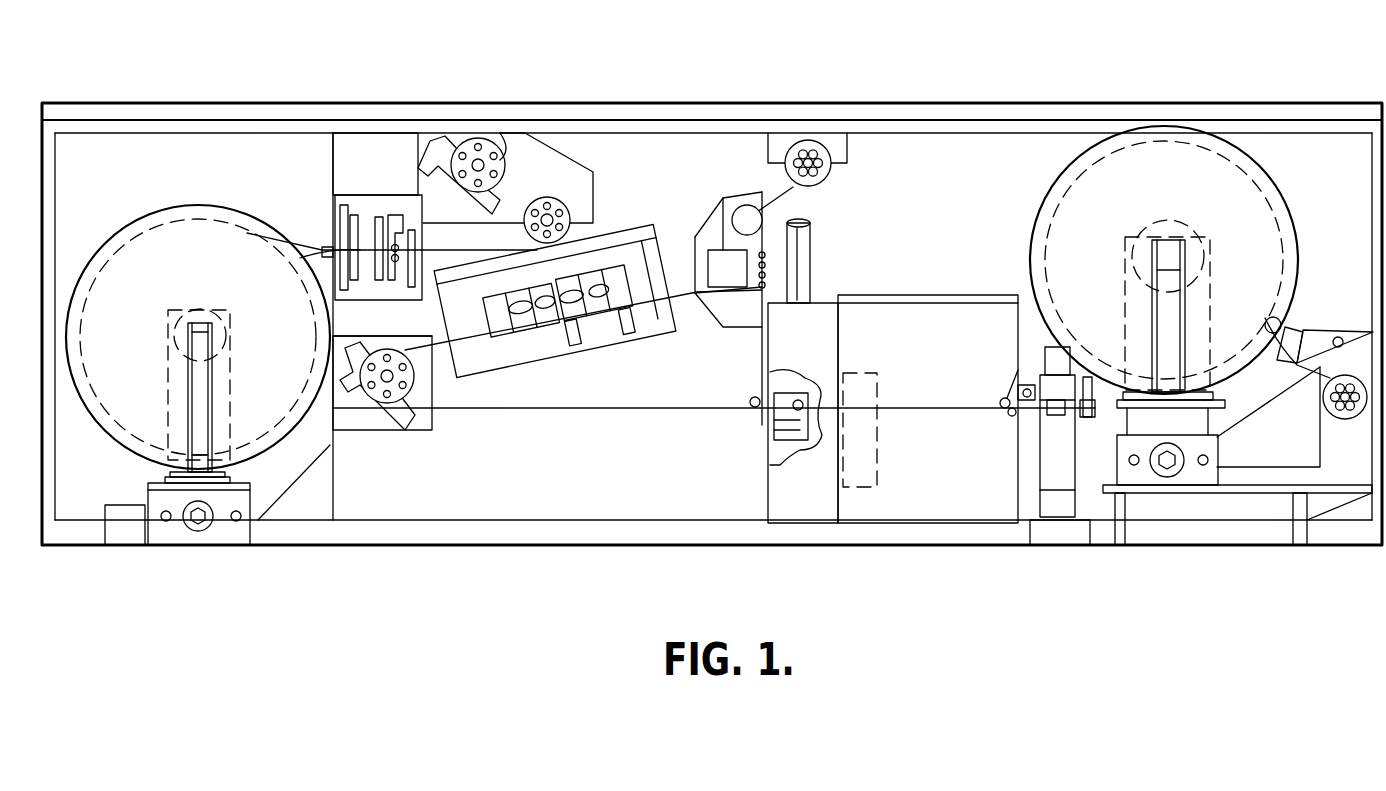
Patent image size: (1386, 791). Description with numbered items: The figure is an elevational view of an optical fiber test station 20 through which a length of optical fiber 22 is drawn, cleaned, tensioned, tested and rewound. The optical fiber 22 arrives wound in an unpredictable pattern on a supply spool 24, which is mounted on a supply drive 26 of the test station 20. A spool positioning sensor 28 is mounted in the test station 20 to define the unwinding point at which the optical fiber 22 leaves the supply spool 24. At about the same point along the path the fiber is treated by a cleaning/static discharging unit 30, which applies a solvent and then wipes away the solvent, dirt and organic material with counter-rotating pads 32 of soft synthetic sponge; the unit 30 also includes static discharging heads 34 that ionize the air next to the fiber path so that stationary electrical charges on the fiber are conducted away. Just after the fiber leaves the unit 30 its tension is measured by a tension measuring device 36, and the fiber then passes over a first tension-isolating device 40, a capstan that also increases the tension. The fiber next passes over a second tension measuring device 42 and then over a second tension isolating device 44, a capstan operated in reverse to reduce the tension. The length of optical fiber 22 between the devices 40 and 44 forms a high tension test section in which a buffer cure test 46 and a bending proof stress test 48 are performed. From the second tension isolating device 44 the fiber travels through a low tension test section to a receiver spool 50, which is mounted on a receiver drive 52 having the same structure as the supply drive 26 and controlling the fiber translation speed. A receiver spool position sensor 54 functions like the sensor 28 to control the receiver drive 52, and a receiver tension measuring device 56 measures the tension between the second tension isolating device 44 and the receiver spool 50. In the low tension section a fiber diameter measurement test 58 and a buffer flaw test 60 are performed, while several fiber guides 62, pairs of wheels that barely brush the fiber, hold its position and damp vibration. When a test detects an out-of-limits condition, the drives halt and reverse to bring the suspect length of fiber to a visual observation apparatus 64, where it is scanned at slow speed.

The optical fiber test station 20 is at (168, 78).
The optical fiber 22 is at (318, 248).
The supply spool 24 is at (150, 215).
The supply drive 26 is at (222, 530).
The spool positioning sensor 28 is at (350, 197).
The cleaning/static discharging unit 30 is at (380, 214).
The counter-rotating pads 32 is at (383, 282).
The static discharging heads 34 is at (305, 258).
The tension measuring device 36 is at (596, 201).
The first tension-isolating device 40 is at (503, 147).
The second tension measuring device 42 is at (833, 183).
The second tension isolating device 44 is at (427, 418).
The buffer cure test 46 is at (800, 251).
The bending proof stress test 48 is at (590, 333).
The receiver spool 50 is at (1278, 186).
The receiver drive 52 is at (1140, 478).
The receiver spool position sensor 54 is at (1282, 320).
The receiver tension measuring device 56 is at (1332, 418).
The fiber diameter measurement test 58 is at (790, 458).
The buffer flaw test 60 is at (878, 467).
The fiber guides 62 is at (752, 410).
The visual observation apparatus 64 is at (1060, 412).